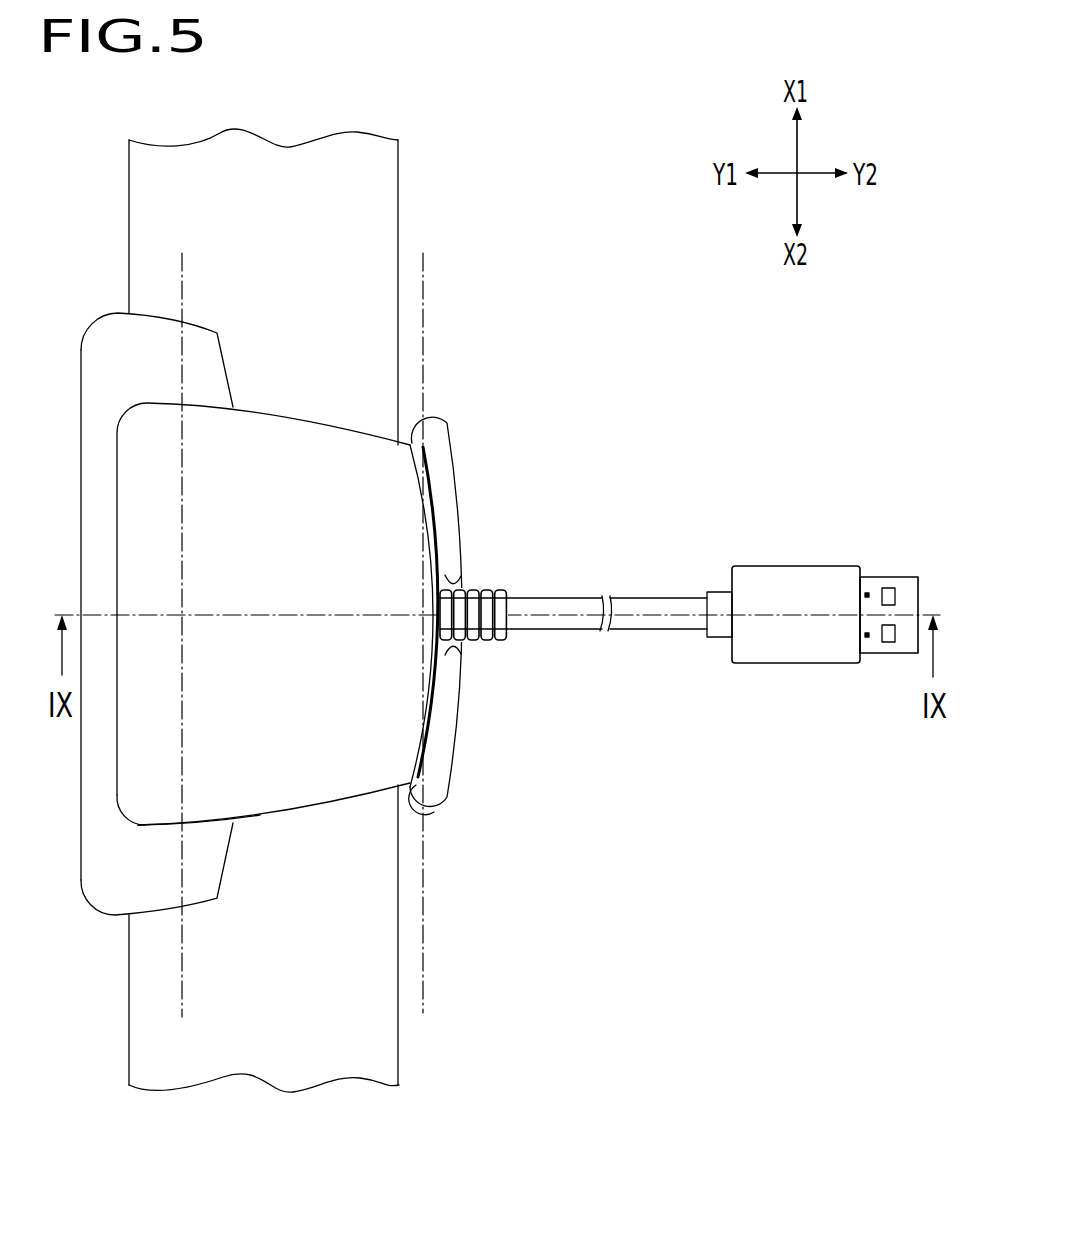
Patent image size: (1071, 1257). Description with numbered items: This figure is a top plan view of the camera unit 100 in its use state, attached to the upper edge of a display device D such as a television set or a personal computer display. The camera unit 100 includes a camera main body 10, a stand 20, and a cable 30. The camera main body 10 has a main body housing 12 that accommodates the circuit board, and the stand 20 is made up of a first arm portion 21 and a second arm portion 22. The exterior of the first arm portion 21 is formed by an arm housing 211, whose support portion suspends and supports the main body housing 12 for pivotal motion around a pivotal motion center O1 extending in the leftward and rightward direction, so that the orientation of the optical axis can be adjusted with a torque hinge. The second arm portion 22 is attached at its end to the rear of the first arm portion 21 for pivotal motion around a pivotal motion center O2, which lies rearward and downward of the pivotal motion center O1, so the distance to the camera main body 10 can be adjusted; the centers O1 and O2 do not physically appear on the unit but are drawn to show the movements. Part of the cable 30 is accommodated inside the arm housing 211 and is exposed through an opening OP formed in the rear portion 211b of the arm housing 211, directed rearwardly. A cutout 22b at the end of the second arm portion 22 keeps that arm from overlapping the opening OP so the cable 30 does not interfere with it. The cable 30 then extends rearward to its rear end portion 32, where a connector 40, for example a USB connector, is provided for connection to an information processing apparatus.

The camera unit 100 is at (460, 317).
The display device D is at (127, 223).
The camera main body 10 is at (130, 606).
The main body housing 12 is at (78, 463).
The stand 20 is at (263, 604).
The first arm portion 21 is at (313, 803).
The arm housing 211 is at (277, 815).
The rear portion of the arm housing 211b is at (430, 540).
The second arm portion 22 is at (441, 613).
The cutout 22b is at (453, 573).
The opening OP is at (437, 600).
The cable 30 is at (660, 594).
The rear end portion 32 is at (793, 567).
The connector 40 is at (905, 577).
The pivotal motion center O1 is at (183, 654).
The pivotal motion center O2 is at (423, 654).